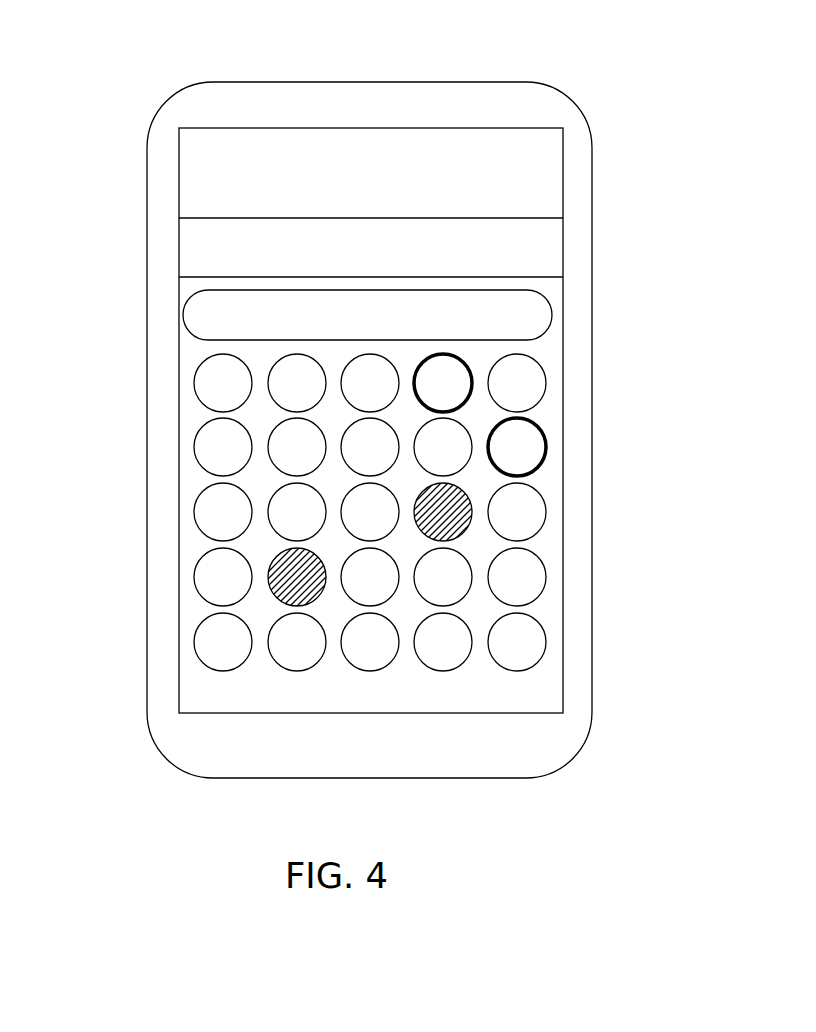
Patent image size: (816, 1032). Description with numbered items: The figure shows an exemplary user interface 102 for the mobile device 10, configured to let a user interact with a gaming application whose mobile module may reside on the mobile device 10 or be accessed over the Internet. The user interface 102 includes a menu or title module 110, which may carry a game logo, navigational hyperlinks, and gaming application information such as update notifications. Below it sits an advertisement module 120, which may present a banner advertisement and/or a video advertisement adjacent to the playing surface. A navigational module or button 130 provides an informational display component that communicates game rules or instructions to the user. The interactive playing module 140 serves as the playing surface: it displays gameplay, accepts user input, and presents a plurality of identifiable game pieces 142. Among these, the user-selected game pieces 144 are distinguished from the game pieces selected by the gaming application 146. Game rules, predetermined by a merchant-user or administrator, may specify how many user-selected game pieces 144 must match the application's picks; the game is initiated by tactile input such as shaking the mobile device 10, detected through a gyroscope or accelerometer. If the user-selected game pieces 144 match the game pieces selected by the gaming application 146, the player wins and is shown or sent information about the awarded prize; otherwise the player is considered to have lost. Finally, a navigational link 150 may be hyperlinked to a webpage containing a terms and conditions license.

The user interface 102 is at (195, 50).
The mobile device 10 is at (490, 82).
The title module 110 is at (152, 167).
The advertisement module 120 is at (192, 262).
The navigational module 130 is at (553, 315).
The interactive playing module 140 is at (115, 275).
The game pieces 142 is at (532, 384).
The user-selected game pieces 144 is at (457, 390).
The game pieces selected by the gaming application 146 is at (323, 578).
The navigational link 150 is at (550, 683).